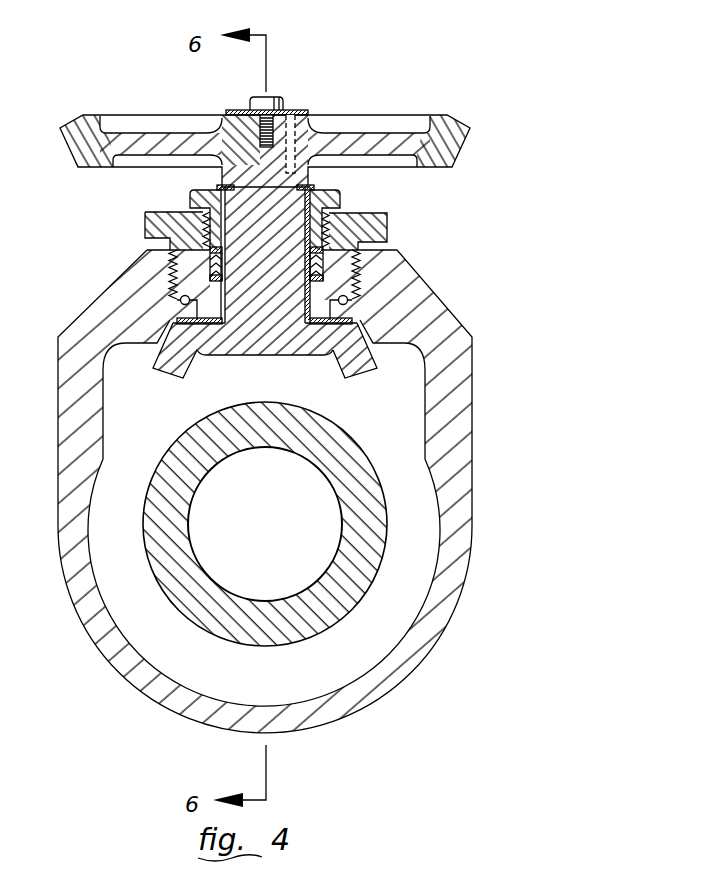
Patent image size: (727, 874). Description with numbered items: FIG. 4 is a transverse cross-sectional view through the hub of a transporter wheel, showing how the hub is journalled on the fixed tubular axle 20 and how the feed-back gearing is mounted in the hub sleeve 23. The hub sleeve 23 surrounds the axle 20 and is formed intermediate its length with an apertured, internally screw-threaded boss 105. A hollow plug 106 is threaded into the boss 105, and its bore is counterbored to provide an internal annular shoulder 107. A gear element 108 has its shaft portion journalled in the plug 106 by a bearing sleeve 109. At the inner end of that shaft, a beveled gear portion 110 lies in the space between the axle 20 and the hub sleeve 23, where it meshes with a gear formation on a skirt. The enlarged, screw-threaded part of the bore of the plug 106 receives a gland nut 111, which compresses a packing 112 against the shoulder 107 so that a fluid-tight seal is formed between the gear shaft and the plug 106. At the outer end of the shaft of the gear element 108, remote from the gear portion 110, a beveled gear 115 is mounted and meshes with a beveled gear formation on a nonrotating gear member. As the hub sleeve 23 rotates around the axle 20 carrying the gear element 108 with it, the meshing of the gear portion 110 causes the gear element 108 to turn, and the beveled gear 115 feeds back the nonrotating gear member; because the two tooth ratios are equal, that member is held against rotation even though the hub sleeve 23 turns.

The boss 105 is at (93, 310).
The hollow plug 106 is at (143, 222).
The internal annular shoulder 107 is at (323, 258).
The gear element 108 is at (282, 342).
The bearing sleeve 109 is at (228, 203).
The beveled gear portion 110 is at (358, 368).
The gland nut 111 is at (340, 192).
The packing 112 is at (323, 250).
The beveled gear 115 is at (385, 127).
The axle 20 is at (378, 572).
The hub sleeve 23 is at (128, 683).